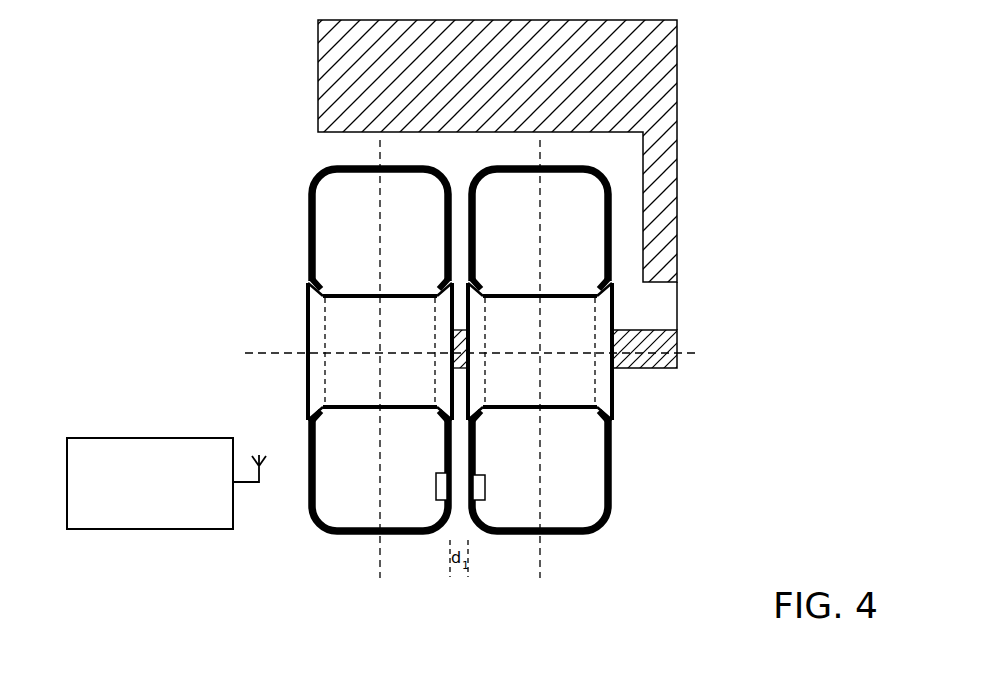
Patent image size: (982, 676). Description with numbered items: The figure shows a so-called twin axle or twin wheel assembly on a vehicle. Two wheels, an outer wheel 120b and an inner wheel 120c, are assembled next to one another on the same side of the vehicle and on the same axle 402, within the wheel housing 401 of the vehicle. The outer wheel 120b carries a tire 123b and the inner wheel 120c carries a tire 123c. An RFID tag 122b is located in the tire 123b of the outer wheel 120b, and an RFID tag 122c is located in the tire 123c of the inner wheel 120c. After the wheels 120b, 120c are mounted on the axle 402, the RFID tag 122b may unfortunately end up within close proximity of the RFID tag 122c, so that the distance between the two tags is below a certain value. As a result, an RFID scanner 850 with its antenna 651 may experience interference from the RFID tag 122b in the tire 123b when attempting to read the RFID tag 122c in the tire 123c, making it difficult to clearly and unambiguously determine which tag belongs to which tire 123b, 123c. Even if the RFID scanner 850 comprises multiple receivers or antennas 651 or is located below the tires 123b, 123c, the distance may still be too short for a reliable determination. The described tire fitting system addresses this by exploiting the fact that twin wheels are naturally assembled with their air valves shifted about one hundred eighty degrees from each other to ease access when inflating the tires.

The wheel housing 401 is at (677, 85).
The axle 402 is at (660, 330).
The outer wheel 120b is at (328, 321).
The inner wheel 120c is at (585, 380).
The tire 123b is at (308, 222).
The tire 123c is at (612, 477).
The RFID tag 122b is at (436, 486).
The RFID tag 122c is at (485, 487).
The RFID scanner 850 is at (150, 483).
The antenna 651 is at (259, 484).